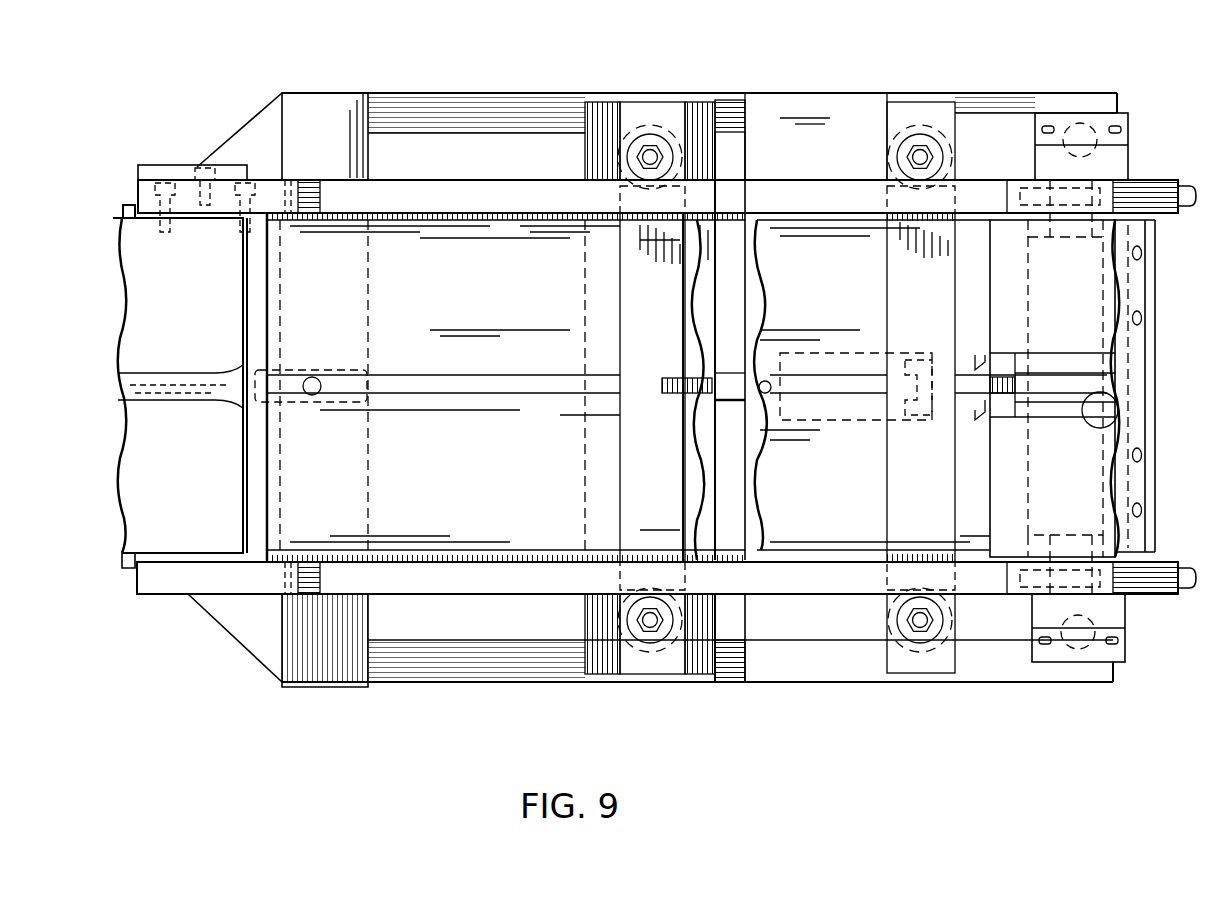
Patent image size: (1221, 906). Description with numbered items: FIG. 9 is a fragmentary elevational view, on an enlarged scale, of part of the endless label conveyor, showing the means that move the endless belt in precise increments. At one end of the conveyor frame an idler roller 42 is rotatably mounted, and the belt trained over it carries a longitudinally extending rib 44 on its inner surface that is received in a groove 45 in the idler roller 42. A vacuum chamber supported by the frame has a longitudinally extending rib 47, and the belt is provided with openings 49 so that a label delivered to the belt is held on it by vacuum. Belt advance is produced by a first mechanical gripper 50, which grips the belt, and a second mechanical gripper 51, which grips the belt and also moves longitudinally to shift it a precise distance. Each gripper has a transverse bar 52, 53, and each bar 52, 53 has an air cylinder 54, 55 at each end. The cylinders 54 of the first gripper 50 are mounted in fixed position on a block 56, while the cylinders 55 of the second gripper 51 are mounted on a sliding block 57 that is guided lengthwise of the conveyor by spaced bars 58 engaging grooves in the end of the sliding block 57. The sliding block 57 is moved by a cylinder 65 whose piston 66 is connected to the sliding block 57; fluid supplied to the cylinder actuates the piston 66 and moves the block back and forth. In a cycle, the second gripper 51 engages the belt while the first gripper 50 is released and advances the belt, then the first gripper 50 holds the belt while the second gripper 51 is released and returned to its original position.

The idler roller 42 is at (1082, 287).
The longitudinally extending rib 44 is at (1098, 437).
The groove 45 is at (1095, 392).
The longitudinally extending rib 47 is at (122, 404).
The opening 49 is at (1137, 318).
The first mechanical gripper 50 is at (924, 112).
The second mechanical gripper 51 is at (668, 112).
The transverse bar 52 is at (932, 279).
The transverse bar 53 is at (660, 279).
The air cylinder 54 is at (942, 135).
The air cylinder 55 is at (640, 136).
The block 56 is at (822, 108).
The sliding block 57 is at (590, 126).
The spaced bars 58 is at (420, 106).
The cylinder 65 is at (806, 354).
The piston 66 is at (913, 412).